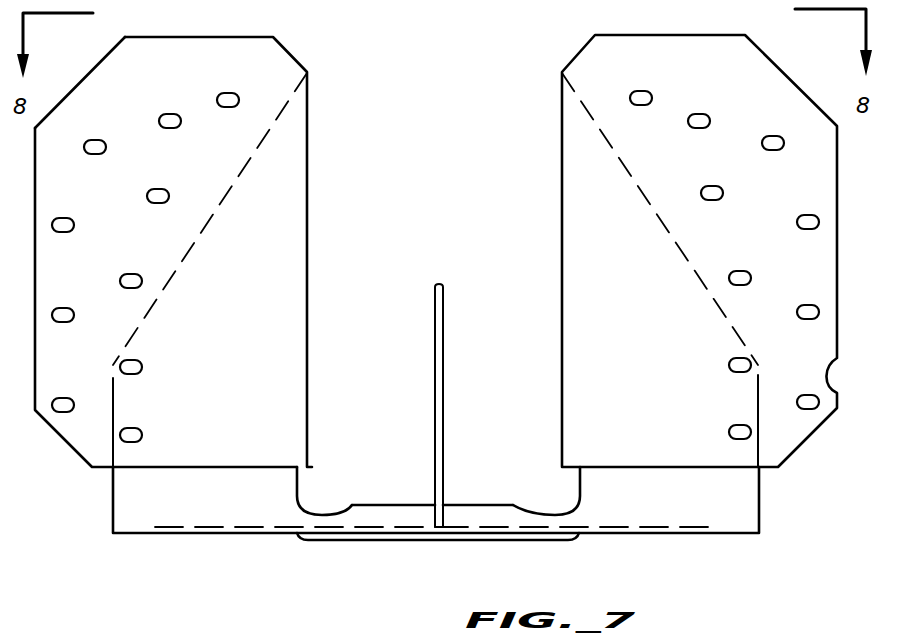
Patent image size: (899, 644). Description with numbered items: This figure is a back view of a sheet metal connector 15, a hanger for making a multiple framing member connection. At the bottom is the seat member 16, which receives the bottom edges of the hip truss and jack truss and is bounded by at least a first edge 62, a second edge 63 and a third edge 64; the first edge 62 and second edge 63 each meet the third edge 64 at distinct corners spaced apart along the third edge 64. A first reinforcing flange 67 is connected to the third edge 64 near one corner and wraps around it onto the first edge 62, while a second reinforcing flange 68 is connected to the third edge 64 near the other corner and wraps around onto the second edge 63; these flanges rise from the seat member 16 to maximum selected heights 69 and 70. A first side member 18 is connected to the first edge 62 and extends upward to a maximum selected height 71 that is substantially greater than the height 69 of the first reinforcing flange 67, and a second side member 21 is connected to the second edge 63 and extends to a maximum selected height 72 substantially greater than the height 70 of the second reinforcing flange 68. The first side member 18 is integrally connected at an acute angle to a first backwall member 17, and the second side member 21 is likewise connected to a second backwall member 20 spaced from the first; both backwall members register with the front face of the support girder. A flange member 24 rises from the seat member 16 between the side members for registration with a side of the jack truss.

The sheet metal connector 15 is at (314, 170).
The seat member 16 is at (172, 535).
The first backwall member 17 is at (762, 52).
The first side member 18 is at (762, 480).
The second backwall member 20 is at (113, 482).
The second side member 21 is at (127, 57).
The flange member 24 is at (438, 283).
The first edge 62 is at (738, 525).
The second edge 63 is at (135, 525).
The third edge 64 is at (427, 527).
The first reinforcing flange 67 is at (320, 512).
The second reinforcing flange 68 is at (545, 512).
The maximum selected height 69 is at (513, 505).
The maximum selected height 70 is at (352, 505).
The maximum selected height 71 is at (562, 77).
The maximum selected height 72 is at (307, 77).